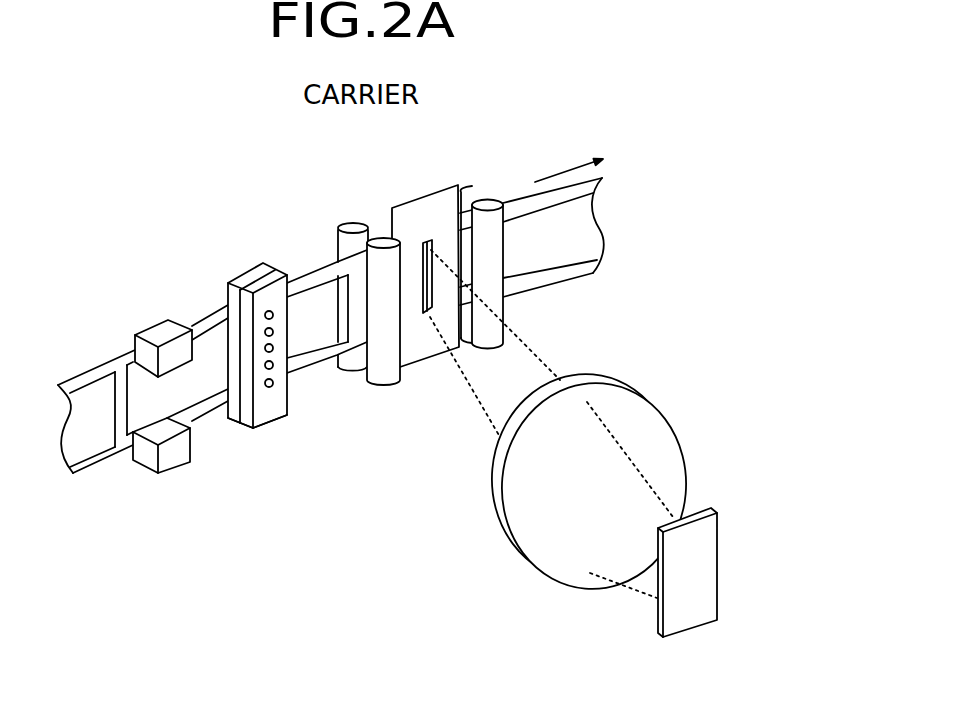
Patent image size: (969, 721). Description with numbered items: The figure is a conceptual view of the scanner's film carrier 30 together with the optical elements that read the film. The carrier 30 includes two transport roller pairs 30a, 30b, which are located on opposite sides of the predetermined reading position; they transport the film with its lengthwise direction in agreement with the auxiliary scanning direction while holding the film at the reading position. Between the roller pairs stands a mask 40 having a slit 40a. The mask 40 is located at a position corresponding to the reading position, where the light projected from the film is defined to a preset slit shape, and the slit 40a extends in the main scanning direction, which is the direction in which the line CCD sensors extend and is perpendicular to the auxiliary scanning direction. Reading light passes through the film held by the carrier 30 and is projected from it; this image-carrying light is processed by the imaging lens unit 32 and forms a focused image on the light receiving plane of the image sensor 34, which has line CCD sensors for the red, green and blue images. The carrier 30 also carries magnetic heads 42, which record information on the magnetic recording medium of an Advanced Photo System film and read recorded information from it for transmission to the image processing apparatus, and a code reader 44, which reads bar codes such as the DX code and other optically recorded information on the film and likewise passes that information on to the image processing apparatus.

The carrier 30 is at (356, 185).
The transport roller pair 30a is at (382, 372).
The transport roller pair 30b is at (488, 280).
The imaging lens unit 32 is at (637, 417).
The image sensor 34 is at (703, 563).
The mask 40 is at (449, 278).
The slit 40a is at (427, 243).
The magnetic heads 42 is at (158, 333).
The code reader 44 is at (248, 277).